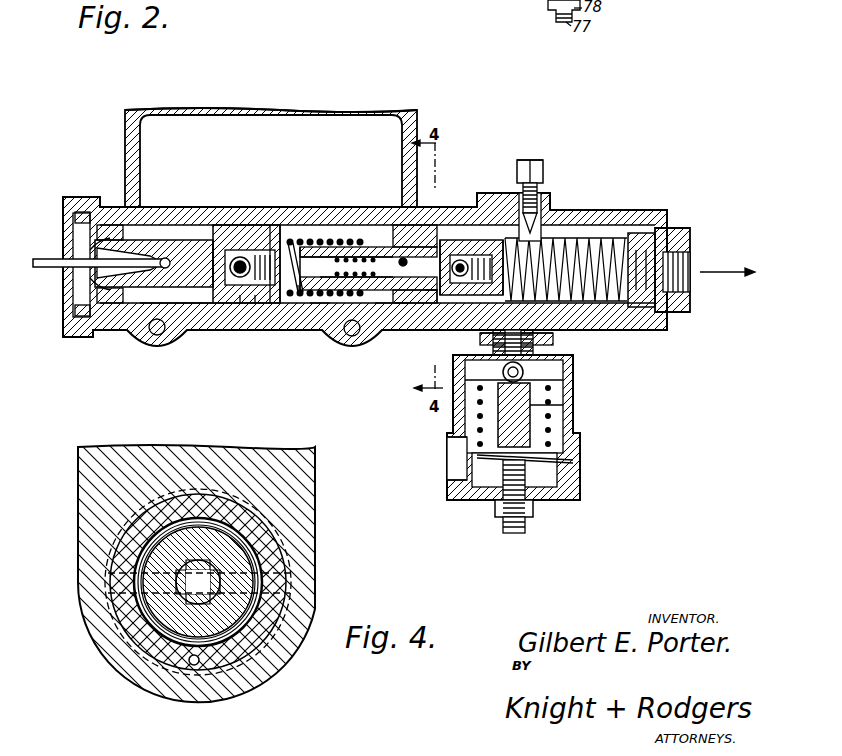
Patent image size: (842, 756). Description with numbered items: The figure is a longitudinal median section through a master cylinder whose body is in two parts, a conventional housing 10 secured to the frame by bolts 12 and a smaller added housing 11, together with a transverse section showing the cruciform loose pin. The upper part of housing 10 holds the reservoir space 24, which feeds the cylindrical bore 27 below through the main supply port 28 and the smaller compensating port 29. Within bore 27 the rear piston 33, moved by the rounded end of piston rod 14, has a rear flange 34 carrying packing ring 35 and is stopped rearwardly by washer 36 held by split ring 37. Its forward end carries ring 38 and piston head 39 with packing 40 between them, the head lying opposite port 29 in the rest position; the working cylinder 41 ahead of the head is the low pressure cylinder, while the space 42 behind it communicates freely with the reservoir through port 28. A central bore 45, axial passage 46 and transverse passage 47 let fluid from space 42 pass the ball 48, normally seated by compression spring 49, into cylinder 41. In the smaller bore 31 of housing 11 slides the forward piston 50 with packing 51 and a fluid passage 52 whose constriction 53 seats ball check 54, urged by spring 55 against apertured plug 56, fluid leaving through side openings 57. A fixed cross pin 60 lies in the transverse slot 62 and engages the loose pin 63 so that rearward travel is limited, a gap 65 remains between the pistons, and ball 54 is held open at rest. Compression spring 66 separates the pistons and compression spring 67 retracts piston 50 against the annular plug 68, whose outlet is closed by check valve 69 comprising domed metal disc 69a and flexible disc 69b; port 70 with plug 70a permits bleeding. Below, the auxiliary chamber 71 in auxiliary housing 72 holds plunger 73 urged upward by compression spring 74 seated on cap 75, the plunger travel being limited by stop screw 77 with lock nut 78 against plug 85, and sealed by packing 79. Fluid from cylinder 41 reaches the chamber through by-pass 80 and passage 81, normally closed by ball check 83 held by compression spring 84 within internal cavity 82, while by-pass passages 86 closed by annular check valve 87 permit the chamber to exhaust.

In FIG. 2, the housing 10 is at (258, 110).
In FIG. 4, the housing 10 is at (78, 463).
In FIG. 2, the housing section 11 is at (657, 203).
In FIG. 4, the housing section 11 is at (137, 531).
In FIG. 2, the bolts 12 is at (155, 333).
In FIG. 2, the piston rod 14 is at (50, 260).
In FIG. 2, the reservoir space 24 is at (150, 147).
In FIG. 2, the cylindrical bore 27 is at (148, 304).
In FIG. 2, the main supply port 28 is at (228, 225).
In FIG. 2, the compensating port 29 is at (270, 235).
In FIG. 2, the cylindrical bore 31 is at (505, 200).
In FIG. 2, the piston 33 is at (180, 238).
In FIG. 2, the flange 34 is at (97, 332).
In FIG. 2, the packing ring 35 is at (110, 226).
In FIG. 2, the washer 36 is at (80, 295).
In FIG. 2, the split ring 37 is at (76, 306).
In FIG. 2, the ring 38 is at (250, 301).
In FIG. 2, the piston head 39 is at (298, 294).
In FIG. 2, the packing 40 is at (262, 301).
In FIG. 2, the working cylinder 41 is at (368, 226).
In FIG. 2, the space 42 is at (200, 232).
In FIG. 2, the central bore 45 is at (296, 258).
In FIG. 2, the axial passage 46 is at (228, 290).
In FIG. 2, the transverse passage 47 is at (205, 303).
In FIG. 2, the ball 48 is at (243, 248).
In FIG. 2, the compression spring 49 is at (284, 250).
In FIG. 2, the forward piston 50 is at (317, 302).
In FIG. 4, the forward piston 50 is at (138, 637).
In FIG. 2, the packing 51 is at (441, 250).
In FIG. 4, the packing 51 is at (238, 538).
In FIG. 2, the fluid passage 52 is at (383, 302).
In FIG. 4, the fluid passage 52 is at (183, 598).
In FIG. 2, the constriction 53 is at (432, 302).
In FIG. 2, the ball check 54 is at (449, 252).
In FIG. 2, the spring 55 is at (476, 238).
In FIG. 2, the apertured plug 56 is at (490, 255).
In FIG. 2, the side openings 57 is at (462, 258).
In FIG. 2, the cross pin 60 is at (410, 245).
In FIG. 4, the cross pin 60 is at (292, 575).
In FIG. 2, the transverse slot 62 is at (325, 291).
In FIG. 4, the transverse slot 62 is at (298, 546).
In FIG. 2, the loose pin 63 is at (410, 291).
In FIG. 4, the loose pin 63 is at (196, 578).
In FIG. 2, the gap 65 is at (305, 296).
In FIG. 2, the compression spring 66 is at (333, 239).
In FIG. 2, the compression spring 67 is at (610, 250).
In FIG. 2, the annular plug 68 is at (688, 228).
In FIG. 2, the check valve 69 is at (643, 240).
In FIG. 2, the domed metal disc 69a is at (648, 245).
In FIG. 2, the flexible disc 69b is at (660, 240).
In FIG. 2, the port 70 is at (548, 215).
In FIG. 2, the plug 70a is at (533, 180).
In FIG. 2, the auxiliary chamber 71 is at (525, 370).
In FIG. 2, the auxiliary housing 72 is at (574, 425).
In FIG. 2, the plunger 73 is at (532, 400).
In FIG. 2, the compression spring 74 is at (574, 461).
In FIG. 2, the cap 75 is at (563, 499).
In FIG. 2, the stop screw 77 is at (523, 531).
In FIG. 2, the lock nut 78 is at (497, 507).
In FIG. 2, the packing 79 is at (576, 388).
In FIG. 2, the by-pass 80 is at (398, 302).
In FIG. 4, the by-pass 80 is at (197, 665).
In FIG. 2, the passage 81 is at (548, 344).
In FIG. 2, the internal cavity 82 is at (495, 396).
In FIG. 2, the ball check 83 is at (565, 380).
In FIG. 2, the compression spring 84 is at (565, 405).
In FIG. 2, the plug 85 is at (488, 438).
In FIG. 2, the by-pass passages 86 is at (493, 340).
In FIG. 2, the check valve 87 is at (570, 331).